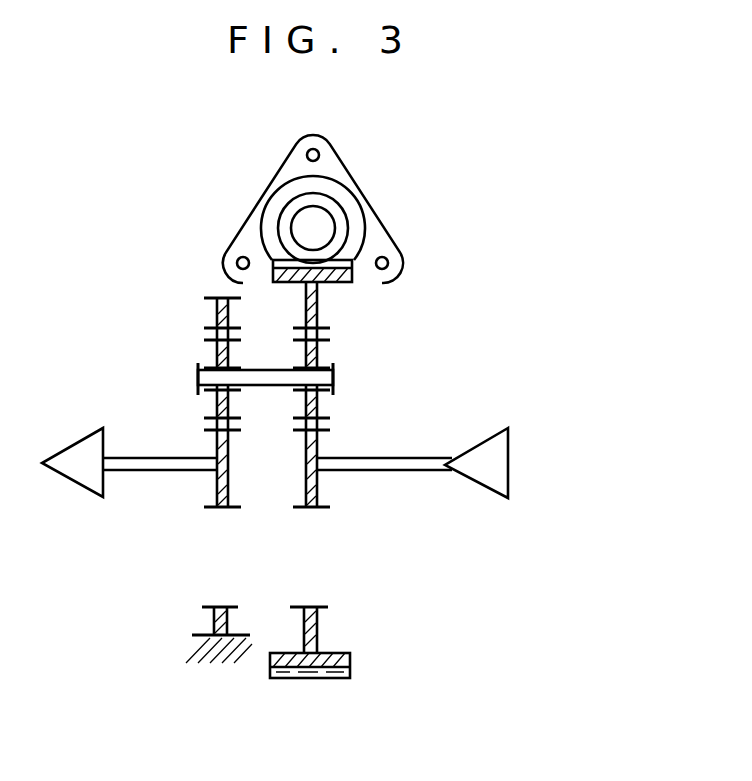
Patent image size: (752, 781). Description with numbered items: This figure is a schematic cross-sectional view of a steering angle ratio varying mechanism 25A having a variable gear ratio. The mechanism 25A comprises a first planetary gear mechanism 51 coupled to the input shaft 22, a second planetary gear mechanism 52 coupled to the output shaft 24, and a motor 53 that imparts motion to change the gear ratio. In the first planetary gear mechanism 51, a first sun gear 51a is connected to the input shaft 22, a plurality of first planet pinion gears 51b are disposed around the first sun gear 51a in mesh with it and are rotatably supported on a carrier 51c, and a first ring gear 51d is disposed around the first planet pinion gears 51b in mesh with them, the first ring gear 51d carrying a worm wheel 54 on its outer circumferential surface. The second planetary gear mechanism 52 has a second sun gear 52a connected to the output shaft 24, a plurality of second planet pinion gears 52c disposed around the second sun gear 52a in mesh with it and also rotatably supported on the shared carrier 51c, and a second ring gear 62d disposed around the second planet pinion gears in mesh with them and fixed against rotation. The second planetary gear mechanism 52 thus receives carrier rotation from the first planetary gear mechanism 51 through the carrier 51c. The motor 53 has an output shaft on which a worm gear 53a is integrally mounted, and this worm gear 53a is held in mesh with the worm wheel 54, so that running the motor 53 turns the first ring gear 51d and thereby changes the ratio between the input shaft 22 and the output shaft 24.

The steering angle ratio varying mechanism 25A is at (545, 218).
The motor 53 is at (367, 182).
The worm gear 53a is at (363, 214).
The first planetary gear mechanism 51 is at (412, 605).
The first sun gear 51a is at (311, 509).
The first planet pinion gears 51b is at (320, 410).
The carrier 51c is at (335, 380).
The first ring gear 51d is at (318, 322).
The second planetary gear mechanism 52 is at (166, 666).
The second sun gear 52a is at (221, 509).
The second planet pinion gears 52c is at (212, 347).
The output shaft 24 is at (173, 471).
The input shaft 22 is at (392, 471).
The second ring gear 62d is at (225, 607).
The worm wheel 54 is at (330, 679).